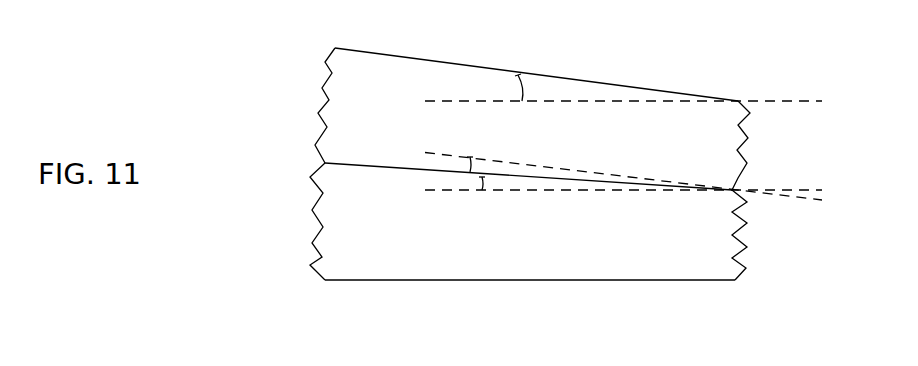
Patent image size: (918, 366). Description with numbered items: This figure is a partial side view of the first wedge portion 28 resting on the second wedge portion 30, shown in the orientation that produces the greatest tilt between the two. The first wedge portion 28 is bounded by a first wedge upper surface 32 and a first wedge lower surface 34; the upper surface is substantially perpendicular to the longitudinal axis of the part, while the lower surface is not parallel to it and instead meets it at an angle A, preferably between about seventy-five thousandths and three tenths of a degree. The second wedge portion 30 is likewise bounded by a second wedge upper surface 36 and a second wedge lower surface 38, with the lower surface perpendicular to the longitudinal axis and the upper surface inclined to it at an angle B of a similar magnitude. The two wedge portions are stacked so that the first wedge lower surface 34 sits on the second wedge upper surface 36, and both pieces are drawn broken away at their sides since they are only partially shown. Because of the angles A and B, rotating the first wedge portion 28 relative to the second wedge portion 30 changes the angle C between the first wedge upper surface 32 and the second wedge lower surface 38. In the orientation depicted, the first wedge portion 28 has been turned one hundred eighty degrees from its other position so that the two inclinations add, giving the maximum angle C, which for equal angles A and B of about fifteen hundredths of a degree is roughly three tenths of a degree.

The first wedge portion 28 is at (364, 122).
The second wedge portion 30 is at (362, 242).
The first wedge upper surface 32 is at (437, 59).
The first wedge lower surface 34 is at (668, 184).
The second wedge upper surface 36 is at (633, 184).
The second wedge lower surface 38 is at (402, 282).
The angle A is at (468, 163).
The angle B is at (477, 183).
The angle C is at (518, 83).